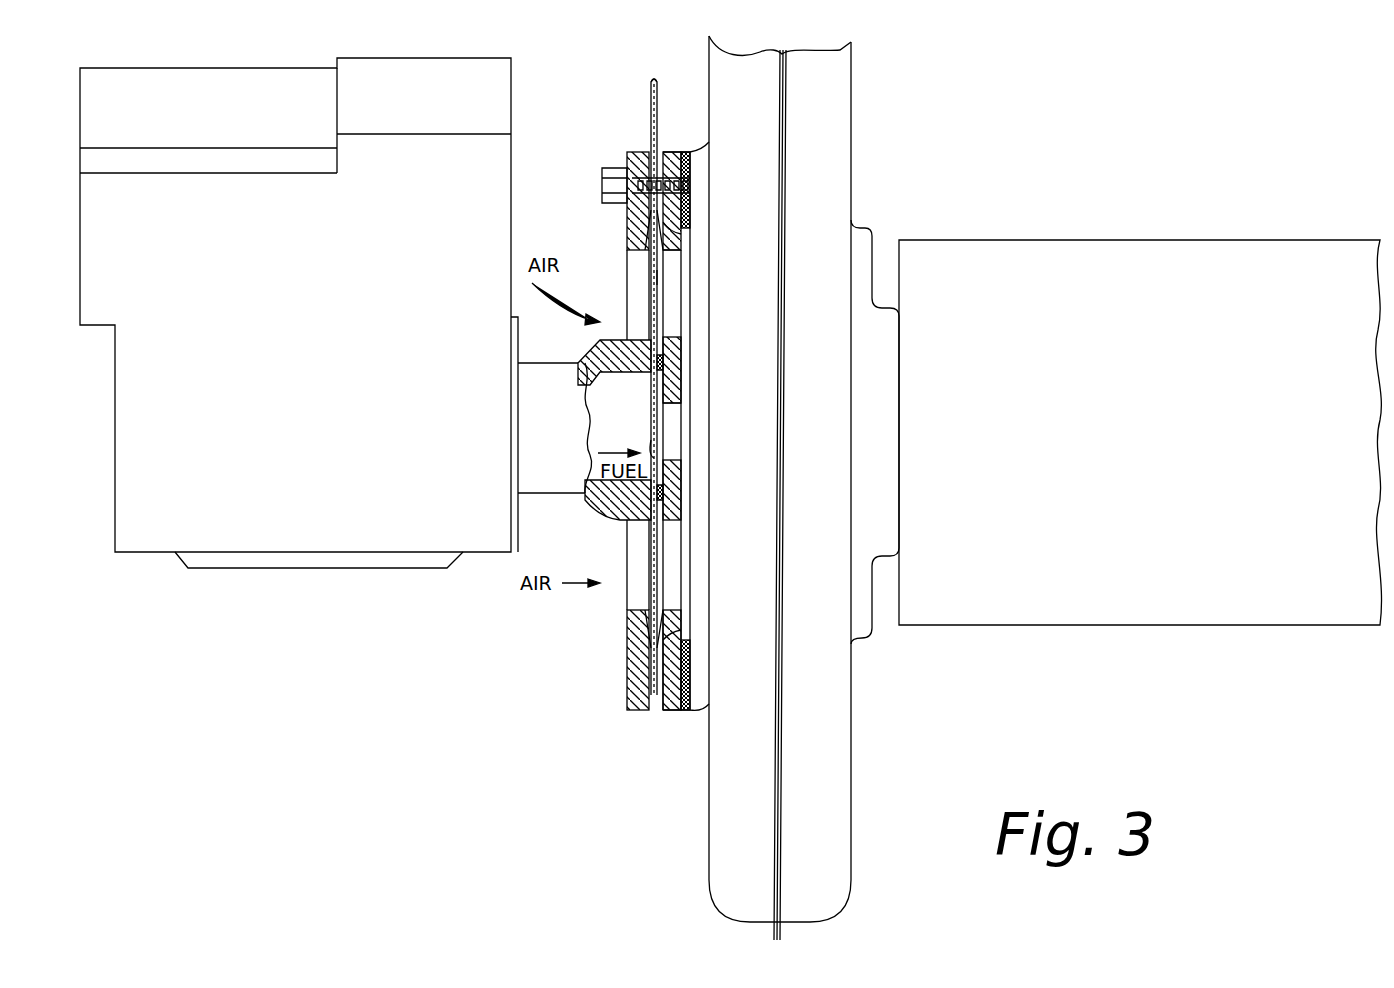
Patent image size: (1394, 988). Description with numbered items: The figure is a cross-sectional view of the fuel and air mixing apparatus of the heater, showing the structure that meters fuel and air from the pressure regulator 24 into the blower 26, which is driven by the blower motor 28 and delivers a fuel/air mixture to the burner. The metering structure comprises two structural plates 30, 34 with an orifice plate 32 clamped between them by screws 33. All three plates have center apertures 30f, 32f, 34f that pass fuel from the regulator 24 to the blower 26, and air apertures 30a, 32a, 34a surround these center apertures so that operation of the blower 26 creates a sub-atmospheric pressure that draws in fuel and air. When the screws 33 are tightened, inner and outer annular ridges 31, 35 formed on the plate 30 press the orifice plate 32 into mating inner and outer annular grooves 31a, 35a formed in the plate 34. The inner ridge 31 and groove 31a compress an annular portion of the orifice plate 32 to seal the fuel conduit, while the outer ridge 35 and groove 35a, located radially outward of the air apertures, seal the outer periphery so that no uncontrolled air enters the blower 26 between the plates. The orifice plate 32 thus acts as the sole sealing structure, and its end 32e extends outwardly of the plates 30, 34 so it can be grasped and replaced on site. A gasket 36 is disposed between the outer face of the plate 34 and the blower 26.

The pressure regulator 24 is at (322, 379).
The blower 26 is at (750, 810).
The blower motor 28 is at (1103, 469).
The structural plate 30 is at (640, 152).
The air aperture 30a is at (632, 612).
The center aperture 30f is at (610, 372).
The inner annular ridge 31 is at (651, 372).
The inner annular groove 31a is at (660, 362).
The orifice plate 32 is at (652, 86).
The air aperture 32a is at (658, 278).
The end of orifice plate 32e is at (658, 92).
The center aperture 32f is at (660, 448).
The screw 33 is at (602, 186).
The structural plate 34 is at (672, 152).
The air aperture 34a is at (683, 252).
The center aperture 34f is at (683, 405).
The outer annular ridge 35 is at (648, 262).
The outer annular groove 35a is at (667, 232).
The gasket 36 is at (688, 712).